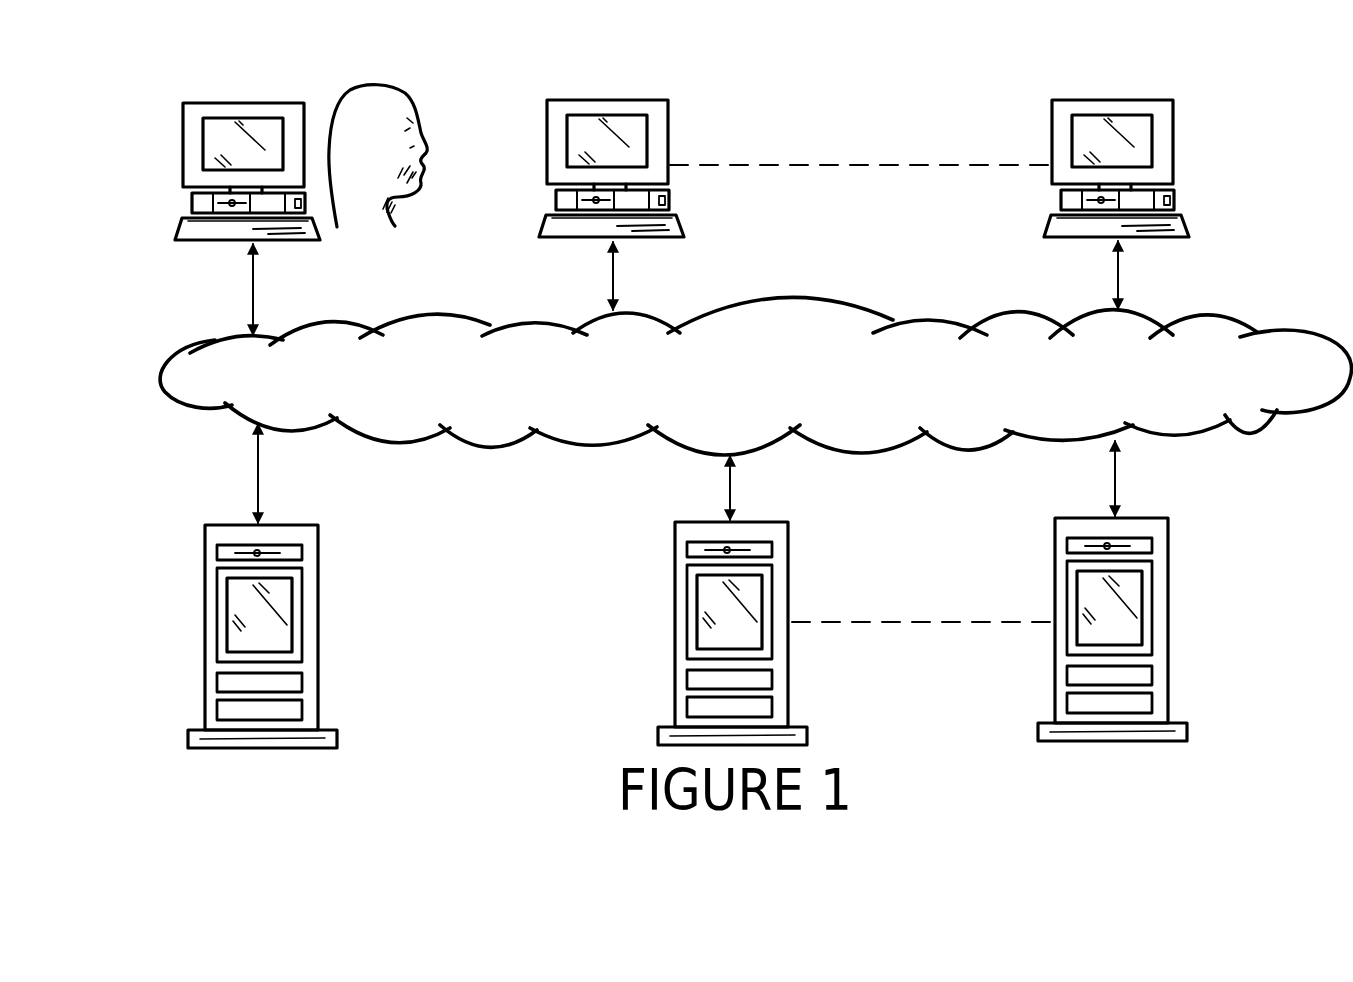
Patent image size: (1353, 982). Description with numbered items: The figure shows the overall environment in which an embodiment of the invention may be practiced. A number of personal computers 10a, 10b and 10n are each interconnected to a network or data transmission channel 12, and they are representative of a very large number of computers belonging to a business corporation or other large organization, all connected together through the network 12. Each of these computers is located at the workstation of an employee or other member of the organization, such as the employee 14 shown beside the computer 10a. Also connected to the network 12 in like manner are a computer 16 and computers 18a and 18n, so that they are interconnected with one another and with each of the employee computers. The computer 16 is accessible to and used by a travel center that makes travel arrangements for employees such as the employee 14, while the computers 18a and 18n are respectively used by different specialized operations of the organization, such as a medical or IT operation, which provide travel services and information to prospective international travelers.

The personal computer 10a is at (259, 108).
The personal computer 10b is at (668, 120).
The personal computer 10n is at (1177, 130).
The network 12 is at (1238, 320).
The employee 14 is at (388, 97).
The computer 16 is at (319, 593).
The computer 18a is at (786, 560).
The computer 18n is at (1168, 553).